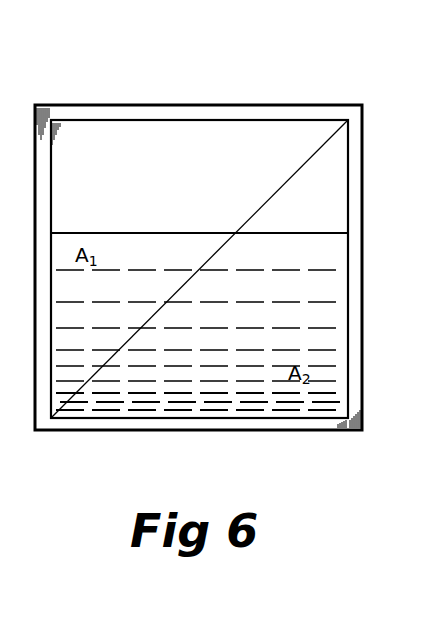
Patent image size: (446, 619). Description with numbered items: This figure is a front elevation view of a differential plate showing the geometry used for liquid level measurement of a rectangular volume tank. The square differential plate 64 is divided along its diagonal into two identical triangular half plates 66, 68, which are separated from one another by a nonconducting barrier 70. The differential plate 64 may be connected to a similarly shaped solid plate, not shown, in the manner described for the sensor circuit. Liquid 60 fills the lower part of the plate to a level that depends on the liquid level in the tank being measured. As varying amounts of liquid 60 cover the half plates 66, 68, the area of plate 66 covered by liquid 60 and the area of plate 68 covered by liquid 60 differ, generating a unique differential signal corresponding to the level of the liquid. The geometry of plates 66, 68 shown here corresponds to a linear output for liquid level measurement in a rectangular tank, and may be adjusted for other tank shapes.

The square differential plate 64 is at (103, 104).
The liquid 60 is at (177, 232).
The nonconducting barrier 70 is at (330, 140).
The triangular half plate 66 is at (135, 173).
The triangular half plate 68 is at (330, 207).